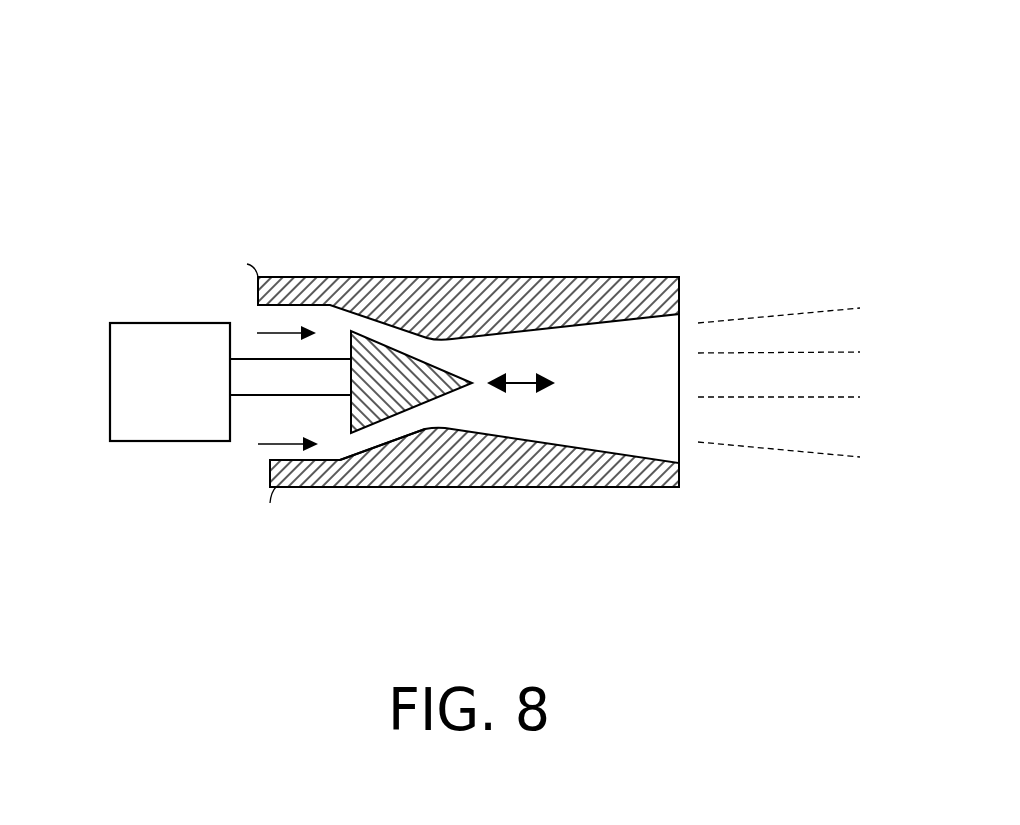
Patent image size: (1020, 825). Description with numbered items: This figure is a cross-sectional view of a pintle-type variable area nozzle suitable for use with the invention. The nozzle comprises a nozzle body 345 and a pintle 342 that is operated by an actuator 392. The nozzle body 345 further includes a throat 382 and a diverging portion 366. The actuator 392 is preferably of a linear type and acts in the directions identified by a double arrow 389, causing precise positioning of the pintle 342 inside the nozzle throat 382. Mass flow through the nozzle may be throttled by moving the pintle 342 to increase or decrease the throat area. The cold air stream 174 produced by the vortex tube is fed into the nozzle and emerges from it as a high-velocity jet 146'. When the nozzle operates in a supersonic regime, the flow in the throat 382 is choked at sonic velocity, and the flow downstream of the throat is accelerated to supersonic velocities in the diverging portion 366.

The pintle 342 is at (380, 338).
The nozzle body 345 is at (470, 488).
The throat 382 is at (442, 425).
The diverging portion 366 is at (647, 457).
The double arrow 389 is at (520, 382).
The actuator 392 is at (185, 322).
The cold air stream 174 is at (273, 357).
The high-velocity jet 146' is at (809, 312).